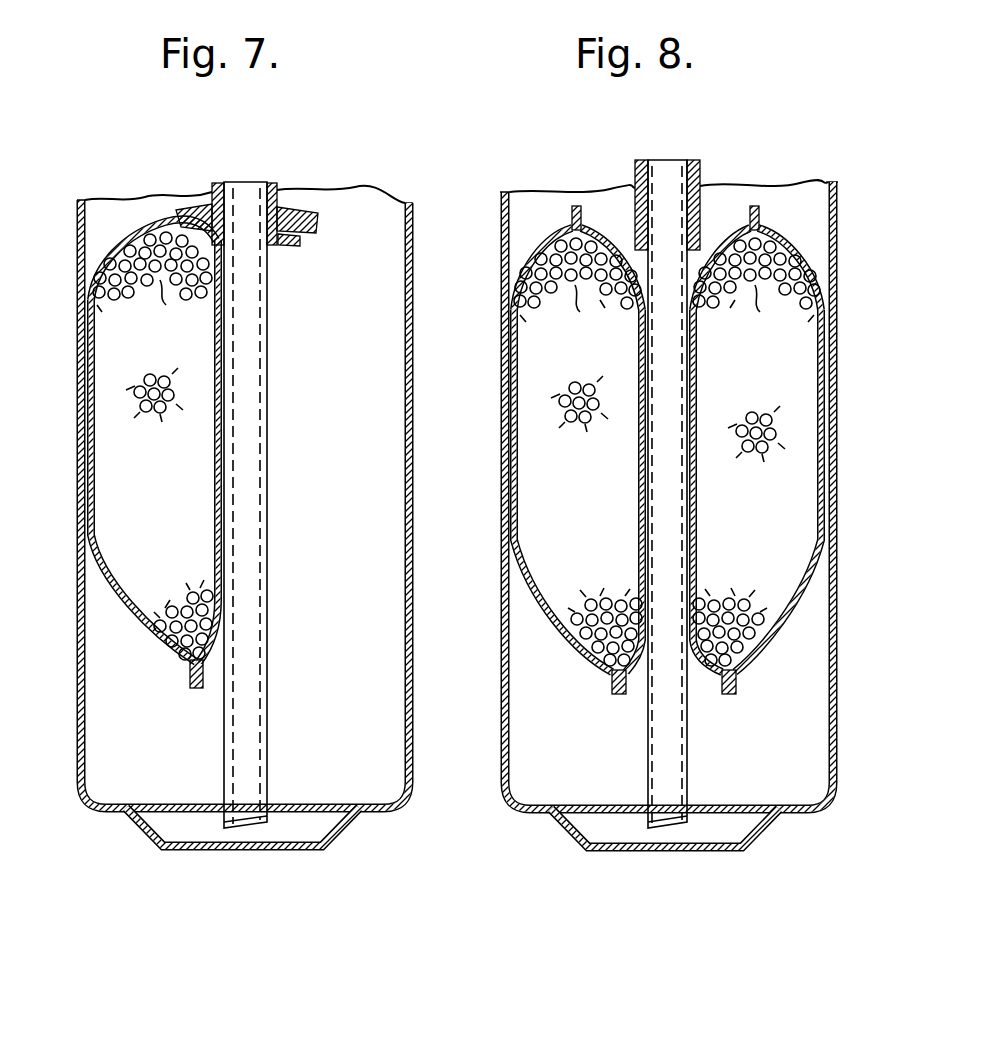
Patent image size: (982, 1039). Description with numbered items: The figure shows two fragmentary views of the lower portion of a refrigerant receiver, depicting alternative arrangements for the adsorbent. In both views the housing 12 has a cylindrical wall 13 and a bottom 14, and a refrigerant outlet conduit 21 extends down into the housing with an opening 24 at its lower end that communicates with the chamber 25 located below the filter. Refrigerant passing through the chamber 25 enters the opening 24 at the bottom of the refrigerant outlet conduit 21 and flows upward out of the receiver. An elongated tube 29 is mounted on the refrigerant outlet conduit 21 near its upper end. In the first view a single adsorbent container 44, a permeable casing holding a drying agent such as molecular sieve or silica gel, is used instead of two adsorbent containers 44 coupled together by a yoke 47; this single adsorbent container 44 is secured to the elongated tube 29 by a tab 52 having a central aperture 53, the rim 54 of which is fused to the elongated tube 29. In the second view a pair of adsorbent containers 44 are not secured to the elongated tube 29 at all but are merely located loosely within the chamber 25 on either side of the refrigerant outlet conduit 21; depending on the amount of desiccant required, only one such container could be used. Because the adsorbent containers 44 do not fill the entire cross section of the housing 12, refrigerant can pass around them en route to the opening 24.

In FIG. 7, the housing 12 is at (256, 518).
In FIG. 8, the housing 12 is at (679, 513).
In FIG. 7, the cylindrical wall 13 is at (413, 232).
In FIG. 8, the cylindrical wall 13 is at (838, 198).
In FIG. 7, the bottom 14 is at (262, 850).
In FIG. 8, the bottom 14 is at (693, 851).
In FIG. 7, the refrigerant outlet conduit 21 is at (285, 485).
In FIG. 8, the refrigerant outlet conduit 21 is at (707, 484).
In FIG. 7, the opening 24 is at (246, 830).
In FIG. 8, the opening 24 is at (676, 830).
In FIG. 7, the chamber 25 is at (345, 663).
In FIG. 8, the chamber 25 is at (581, 738).
In FIG. 7, the elongated tube 29 is at (280, 186).
In FIG. 8, the elongated tube 29 is at (700, 180).
In FIG. 7, the adsorbent container 44 is at (100, 455).
In FIG. 8, the adsorbent container 44 is at (540, 470).
In FIG. 7, the yoke 47 is at (156, 384).
In FIG. 8, the yoke 47 is at (575, 385).
In FIG. 7, the tab 52 is at (283, 229).
In FIG. 7, the central aperture 53 is at (281, 246).
In FIG. 7, the rim 54 is at (201, 216).